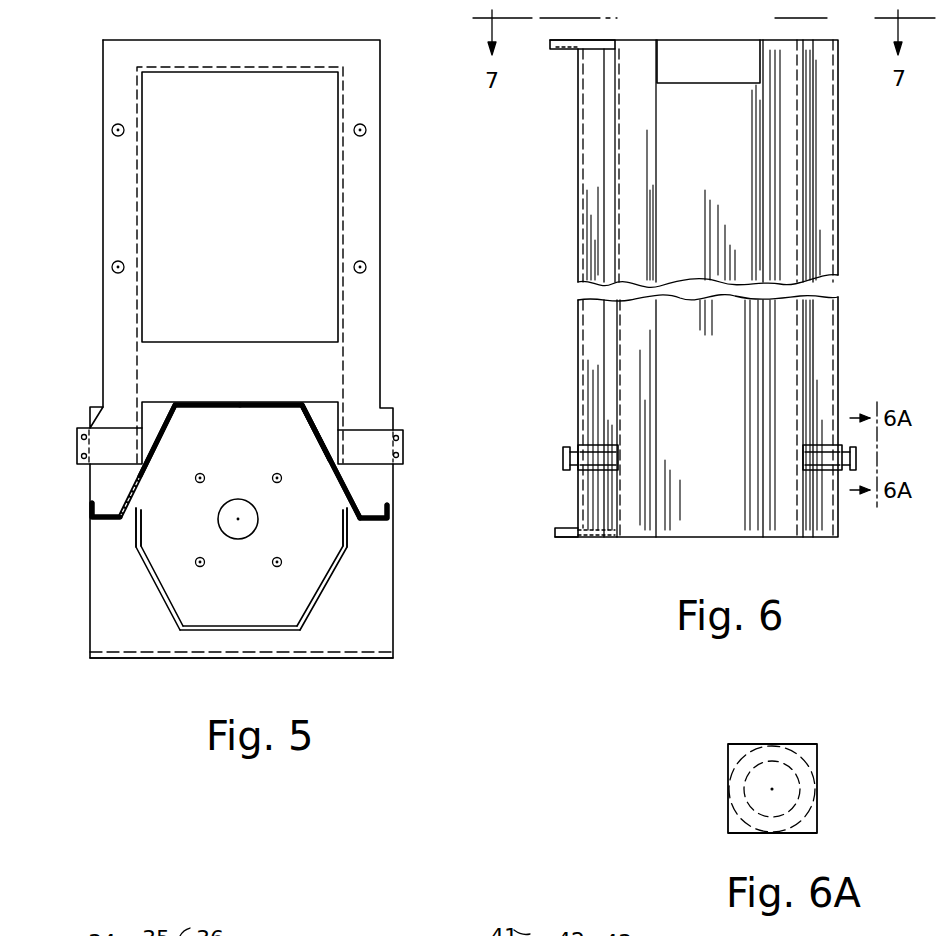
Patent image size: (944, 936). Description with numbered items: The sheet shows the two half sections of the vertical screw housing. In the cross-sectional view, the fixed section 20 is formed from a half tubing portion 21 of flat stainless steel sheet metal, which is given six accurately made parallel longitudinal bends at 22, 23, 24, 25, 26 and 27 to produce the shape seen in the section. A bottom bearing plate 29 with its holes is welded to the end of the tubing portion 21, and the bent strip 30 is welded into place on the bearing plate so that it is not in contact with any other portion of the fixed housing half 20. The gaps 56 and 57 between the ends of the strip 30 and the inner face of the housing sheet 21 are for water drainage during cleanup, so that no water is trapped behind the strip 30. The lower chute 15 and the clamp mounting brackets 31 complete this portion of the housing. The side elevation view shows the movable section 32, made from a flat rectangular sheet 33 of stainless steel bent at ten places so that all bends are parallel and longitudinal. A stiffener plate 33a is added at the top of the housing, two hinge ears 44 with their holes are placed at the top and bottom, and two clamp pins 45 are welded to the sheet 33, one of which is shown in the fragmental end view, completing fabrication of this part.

In FIG. 5, the chute 15 is at (330, 201).
In FIG. 5, the fixed section 20 is at (380, 530).
In FIG. 5, the half tubing portion 21 is at (352, 491).
In FIG. 5, the longitudinal bend 22 is at (97, 521).
In FIG. 5, the longitudinal bend 23 is at (127, 517).
In FIG. 5, the longitudinal bend 24 is at (178, 411).
In FIG. 5, the longitudinal bend 25 is at (304, 409).
In FIG. 5, the longitudinal bend 26 is at (358, 526).
In FIG. 5, the longitudinal bend 27 is at (388, 525).
In FIG. 5, the bottom bearing plate 29 is at (393, 617).
In FIG. 5, the bent strip 30 is at (290, 633).
In FIG. 5, the clamp mounting bracket 31 is at (77, 446).
In FIG. 6, the movable section 32 is at (820, 36).
In FIG. 6, the flat rectangular sheet 33 is at (630, 208).
In FIG. 6, the stiffener plate 33a is at (688, 58).
In FIG. 6, the hinge ear 44 is at (565, 45).
In FIG. 6, the clamp pin 45 is at (563, 459).
In FIG. 6A, the clamp pin 45 is at (729, 762).
In FIG. 5, the gap 56 is at (128, 509).
In FIG. 5, the gap 57 is at (352, 508).